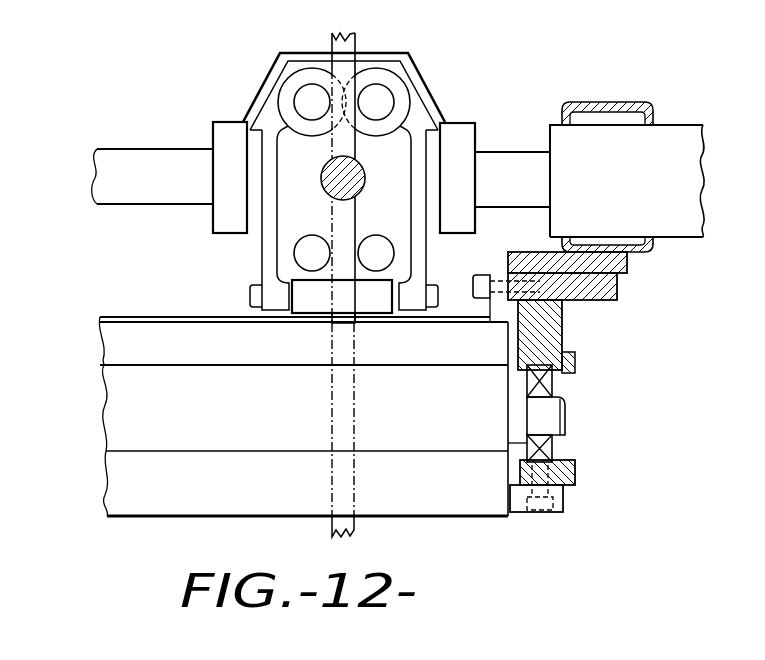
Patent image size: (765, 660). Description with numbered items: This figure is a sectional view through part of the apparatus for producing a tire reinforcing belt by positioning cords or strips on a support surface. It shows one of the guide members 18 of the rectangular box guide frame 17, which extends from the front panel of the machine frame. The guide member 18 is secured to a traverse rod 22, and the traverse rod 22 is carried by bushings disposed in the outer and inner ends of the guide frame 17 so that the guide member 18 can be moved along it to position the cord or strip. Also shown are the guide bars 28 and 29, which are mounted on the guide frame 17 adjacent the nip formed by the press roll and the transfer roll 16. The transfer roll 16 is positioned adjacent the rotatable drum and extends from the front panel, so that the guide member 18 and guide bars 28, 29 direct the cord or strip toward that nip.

The transfer roll 16 is at (115, 410).
The rectangular box guide frame 17 is at (620, 103).
The guide member 18 is at (452, 70).
The traverse rod 22 is at (103, 152).
The guide bar 28 is at (104, 342).
The guide bar 29 is at (118, 494).